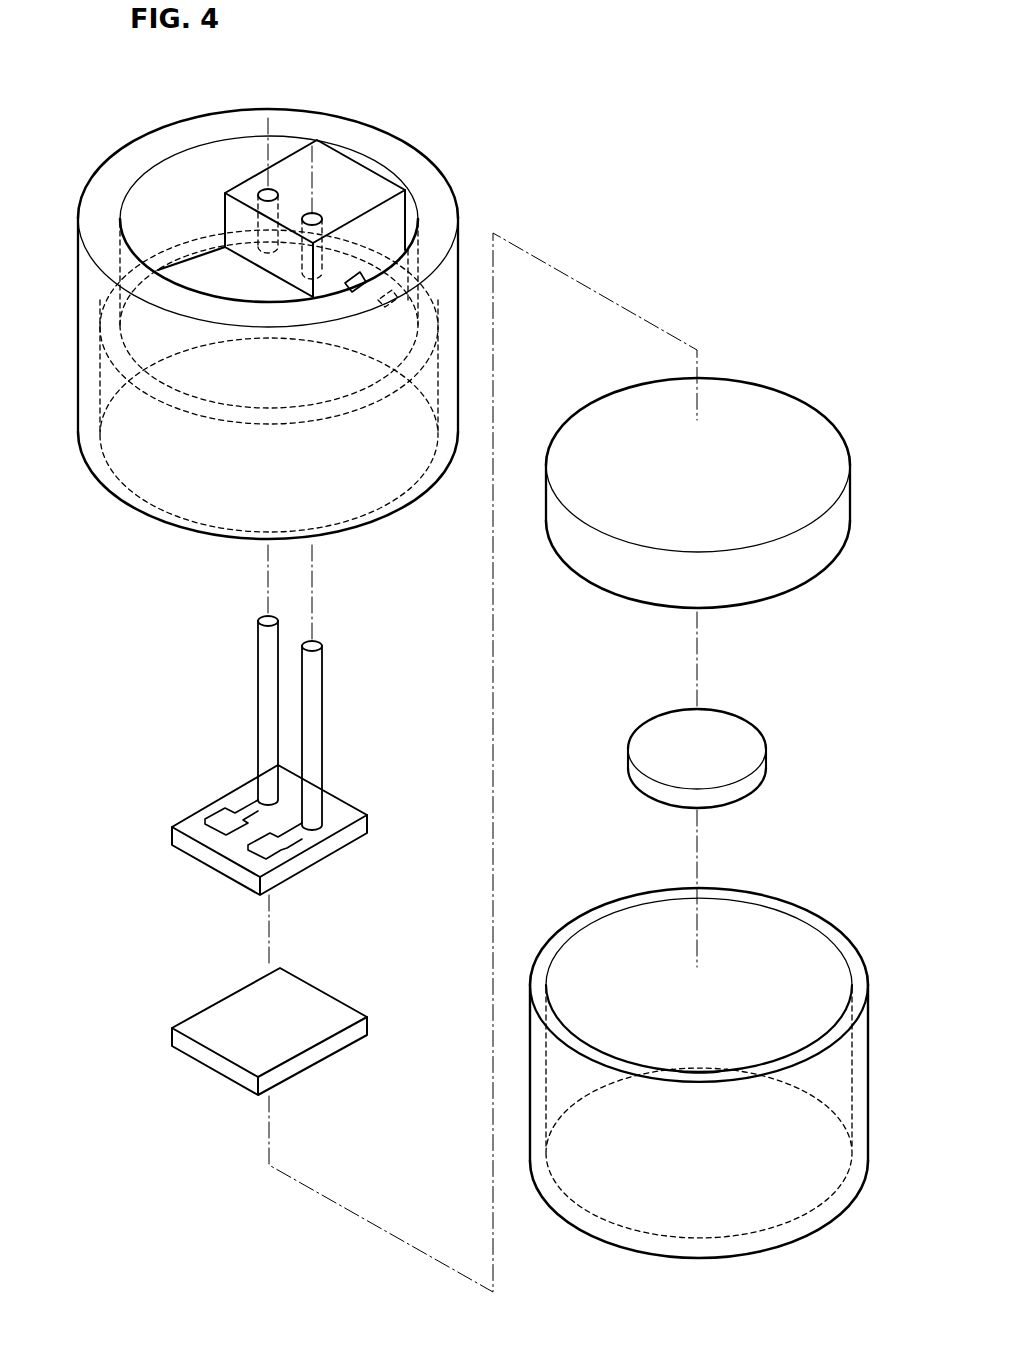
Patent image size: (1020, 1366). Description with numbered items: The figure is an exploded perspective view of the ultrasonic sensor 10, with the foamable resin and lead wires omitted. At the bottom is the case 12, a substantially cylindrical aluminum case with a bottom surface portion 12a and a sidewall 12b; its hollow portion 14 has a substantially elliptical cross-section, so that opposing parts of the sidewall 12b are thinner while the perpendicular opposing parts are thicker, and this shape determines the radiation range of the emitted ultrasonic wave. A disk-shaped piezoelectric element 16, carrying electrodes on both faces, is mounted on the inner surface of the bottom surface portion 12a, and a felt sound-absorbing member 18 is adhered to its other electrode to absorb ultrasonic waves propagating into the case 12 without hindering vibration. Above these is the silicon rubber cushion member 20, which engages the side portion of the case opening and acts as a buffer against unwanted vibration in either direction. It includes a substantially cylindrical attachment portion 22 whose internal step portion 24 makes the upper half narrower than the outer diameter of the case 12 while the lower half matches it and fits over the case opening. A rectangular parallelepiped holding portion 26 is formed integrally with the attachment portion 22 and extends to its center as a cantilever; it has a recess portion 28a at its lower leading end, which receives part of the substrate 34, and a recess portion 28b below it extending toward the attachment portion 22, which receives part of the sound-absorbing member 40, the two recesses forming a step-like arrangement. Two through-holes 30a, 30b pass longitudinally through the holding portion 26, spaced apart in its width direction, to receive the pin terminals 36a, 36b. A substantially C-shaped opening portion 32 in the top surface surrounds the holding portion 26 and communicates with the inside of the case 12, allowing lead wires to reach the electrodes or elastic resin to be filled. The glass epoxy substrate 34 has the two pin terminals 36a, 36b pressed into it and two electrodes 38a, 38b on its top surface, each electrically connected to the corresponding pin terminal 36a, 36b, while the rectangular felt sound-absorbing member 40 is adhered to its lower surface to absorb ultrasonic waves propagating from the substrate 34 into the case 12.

The ultrasonic sensor 10 is at (738, 149).
The case 12 is at (811, 910).
The bottom surface portion 12a is at (778, 1197).
The sidewall 12b is at (868, 1050).
The hollow portion 14 is at (761, 930).
The piezoelectric element 16 is at (745, 737).
The sound-absorbing member 18 is at (810, 432).
The cushion member 20 is at (122, 143).
The attachment portion 22 is at (106, 185).
The step portion 24 is at (106, 470).
The holding portion 26 is at (345, 178).
The recess portion 28a is at (360, 268).
The recess portion 28b is at (382, 298).
The through-hole 30a is at (262, 190).
The through-hole 30b is at (306, 214).
The opening portion 32 is at (178, 188).
The substrate 34 is at (183, 828).
The pin terminal 36a is at (258, 634).
The pin terminal 36b is at (318, 668).
The electrode 38a is at (221, 817).
The electrode 38b is at (287, 847).
The sound-absorbing member 40 is at (190, 1030).